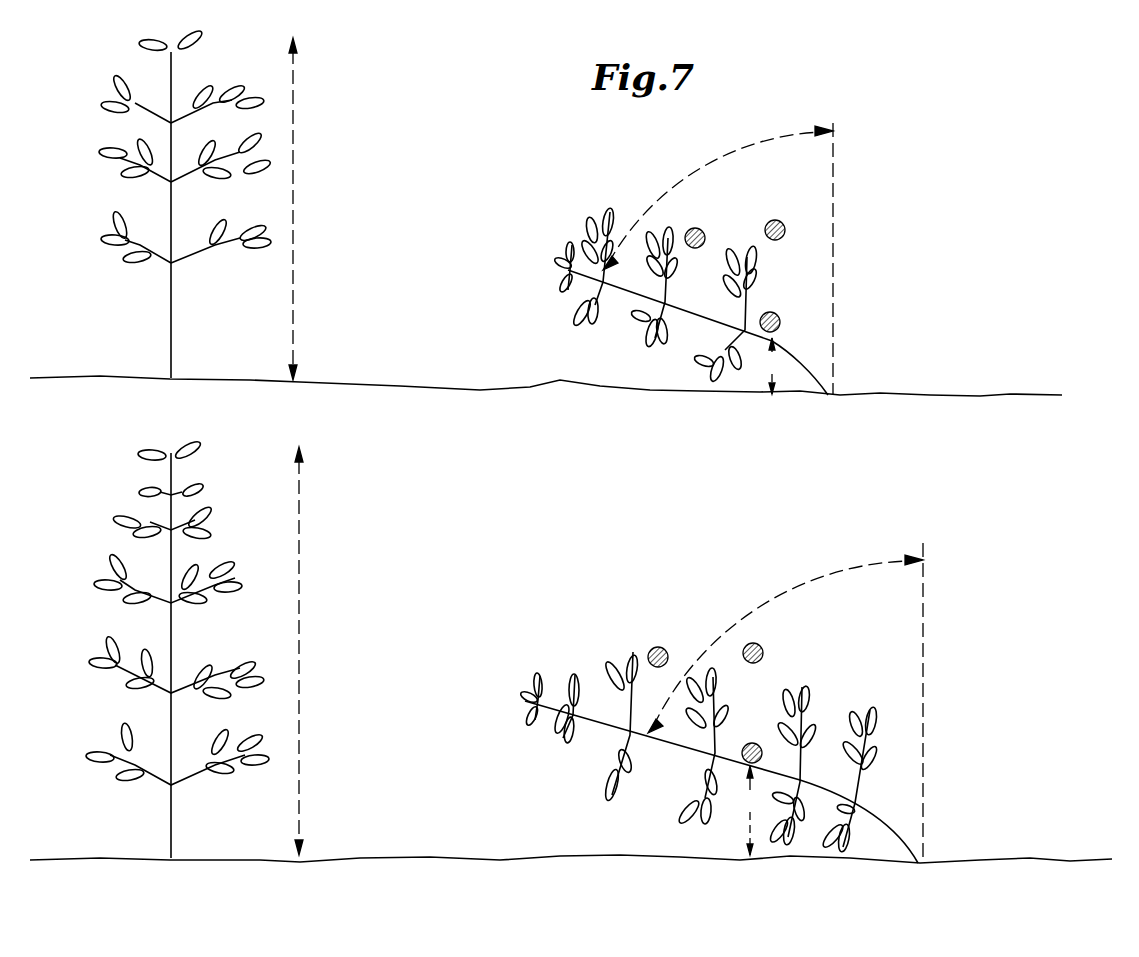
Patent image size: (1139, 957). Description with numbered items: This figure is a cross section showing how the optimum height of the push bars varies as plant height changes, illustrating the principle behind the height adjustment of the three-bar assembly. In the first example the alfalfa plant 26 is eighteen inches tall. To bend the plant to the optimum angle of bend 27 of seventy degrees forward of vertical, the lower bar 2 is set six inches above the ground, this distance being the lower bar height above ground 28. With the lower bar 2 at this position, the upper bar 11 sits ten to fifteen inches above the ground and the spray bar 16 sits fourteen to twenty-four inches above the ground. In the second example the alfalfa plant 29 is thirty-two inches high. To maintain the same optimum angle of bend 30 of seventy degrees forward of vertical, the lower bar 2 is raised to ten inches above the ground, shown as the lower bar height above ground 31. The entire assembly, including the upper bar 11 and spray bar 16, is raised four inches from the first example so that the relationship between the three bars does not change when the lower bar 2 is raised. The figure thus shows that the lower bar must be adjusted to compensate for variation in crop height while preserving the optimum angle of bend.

The lower bar 2 is at (776, 535).
The upper bar 11 is at (696, 436).
The spray bar 16 is at (784, 425).
The alfalfa plant 26 is at (307, 209).
The optimum angle of bend 27 is at (718, 198).
The lower bar height above ground 28 is at (775, 366).
The alfalfa plant 29 is at (307, 651).
The optimum angle of bend 30 is at (785, 644).
The lower bar height above ground 31 is at (759, 810).